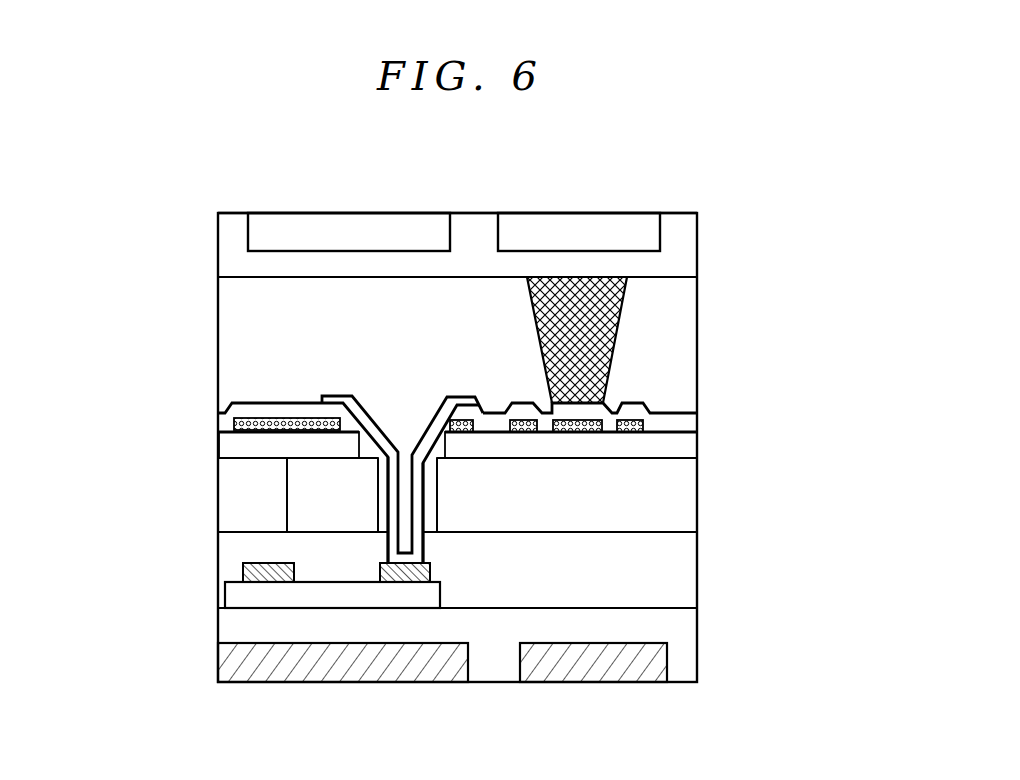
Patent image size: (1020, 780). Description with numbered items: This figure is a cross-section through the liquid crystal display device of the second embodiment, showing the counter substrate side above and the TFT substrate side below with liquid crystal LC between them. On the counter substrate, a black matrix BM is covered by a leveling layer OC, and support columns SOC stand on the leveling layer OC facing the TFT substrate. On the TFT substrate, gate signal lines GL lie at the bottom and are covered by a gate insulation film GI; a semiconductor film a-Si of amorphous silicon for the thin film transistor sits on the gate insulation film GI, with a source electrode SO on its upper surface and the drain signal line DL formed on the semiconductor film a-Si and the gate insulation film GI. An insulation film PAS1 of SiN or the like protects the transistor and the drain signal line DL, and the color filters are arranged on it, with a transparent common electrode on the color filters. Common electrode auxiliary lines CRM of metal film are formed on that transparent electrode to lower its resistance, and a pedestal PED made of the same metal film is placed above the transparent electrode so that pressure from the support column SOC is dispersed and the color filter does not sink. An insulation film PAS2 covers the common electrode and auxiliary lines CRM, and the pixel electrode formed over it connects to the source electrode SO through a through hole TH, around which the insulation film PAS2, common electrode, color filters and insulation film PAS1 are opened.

The black matrix BM is at (533, 225).
The leveling layer OC is at (682, 225).
The liquid crystal LC is at (434, 339).
The support column SOC is at (628, 318).
The pedestal PED is at (590, 420).
The insulation film PAS2 is at (692, 425).
The common electrode auxiliary line CRM is at (452, 420).
The through hole TH is at (392, 498).
The insulation film PAS1 is at (678, 593).
The drain signal line DL is at (243, 568).
The source electrode SO is at (408, 583).
The semiconductor film a-Si is at (233, 597).
The gate insulation film GI is at (683, 633).
The gate signal line GL is at (373, 672).